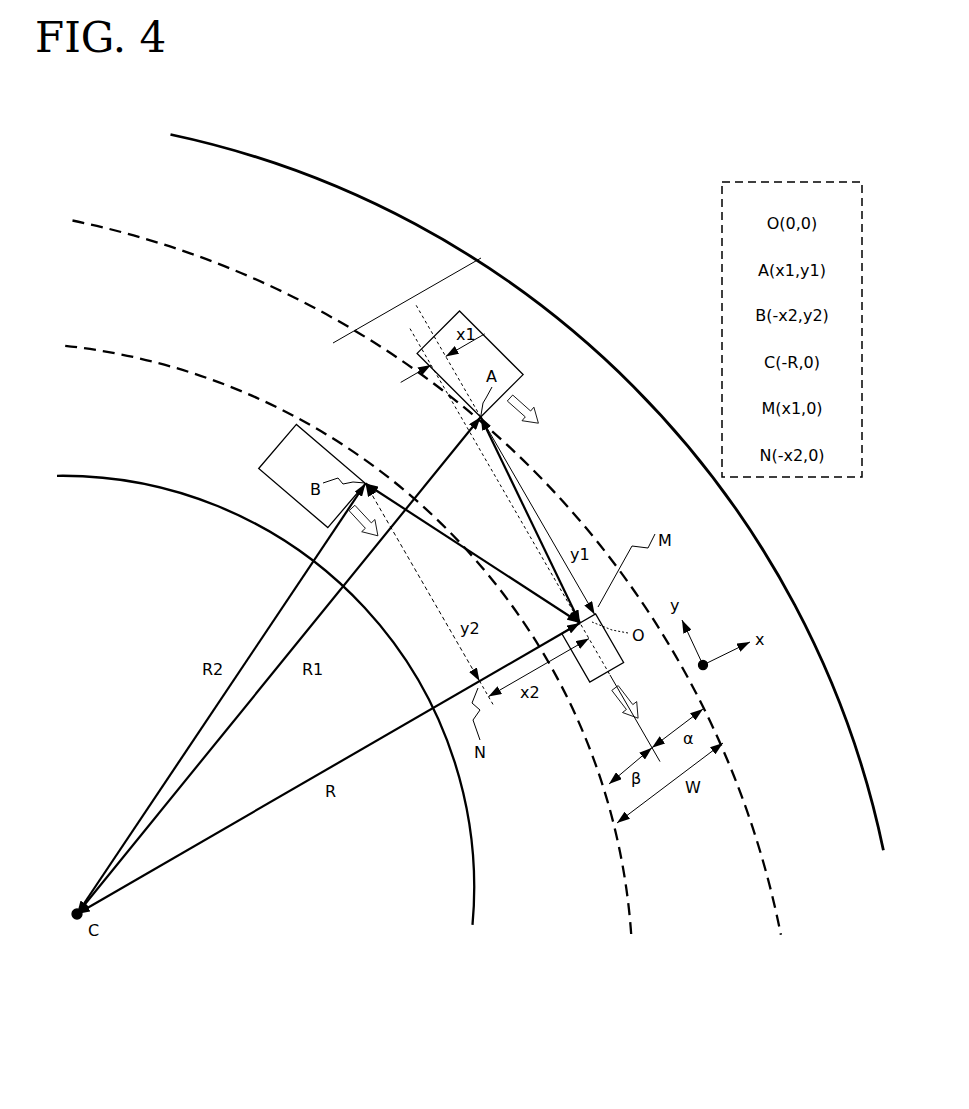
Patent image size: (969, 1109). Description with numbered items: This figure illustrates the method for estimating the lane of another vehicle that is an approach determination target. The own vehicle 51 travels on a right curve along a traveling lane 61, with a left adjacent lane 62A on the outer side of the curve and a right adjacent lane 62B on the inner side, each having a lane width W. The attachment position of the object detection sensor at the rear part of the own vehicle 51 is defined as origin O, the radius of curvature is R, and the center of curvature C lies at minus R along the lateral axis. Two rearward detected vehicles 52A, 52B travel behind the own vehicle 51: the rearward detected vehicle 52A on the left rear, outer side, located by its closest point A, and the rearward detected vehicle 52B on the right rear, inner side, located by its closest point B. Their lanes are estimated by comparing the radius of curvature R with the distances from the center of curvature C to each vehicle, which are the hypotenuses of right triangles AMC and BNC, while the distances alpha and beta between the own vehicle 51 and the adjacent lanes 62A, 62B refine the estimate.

The left adjacent lane 62A is at (333, 210).
The right adjacent lane 62B is at (173, 450).
The traveling lane 61 is at (481, 250).
The rearward detected vehicle 52A is at (523, 375).
The rearward detected vehicle 52B is at (297, 477).
The own vehicle 51 is at (620, 665).